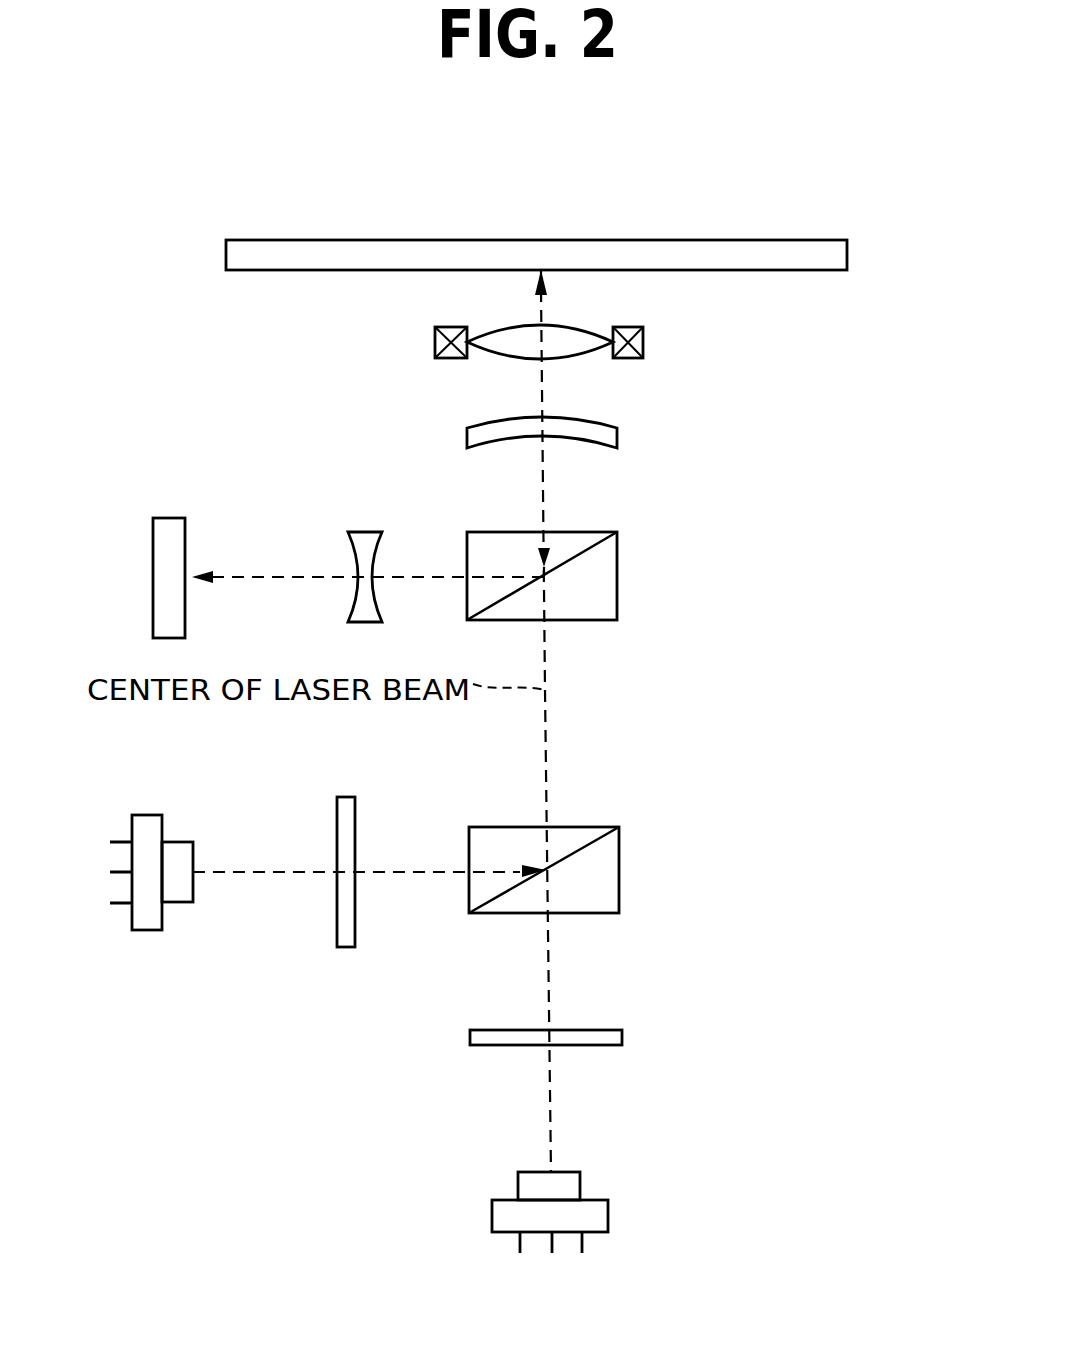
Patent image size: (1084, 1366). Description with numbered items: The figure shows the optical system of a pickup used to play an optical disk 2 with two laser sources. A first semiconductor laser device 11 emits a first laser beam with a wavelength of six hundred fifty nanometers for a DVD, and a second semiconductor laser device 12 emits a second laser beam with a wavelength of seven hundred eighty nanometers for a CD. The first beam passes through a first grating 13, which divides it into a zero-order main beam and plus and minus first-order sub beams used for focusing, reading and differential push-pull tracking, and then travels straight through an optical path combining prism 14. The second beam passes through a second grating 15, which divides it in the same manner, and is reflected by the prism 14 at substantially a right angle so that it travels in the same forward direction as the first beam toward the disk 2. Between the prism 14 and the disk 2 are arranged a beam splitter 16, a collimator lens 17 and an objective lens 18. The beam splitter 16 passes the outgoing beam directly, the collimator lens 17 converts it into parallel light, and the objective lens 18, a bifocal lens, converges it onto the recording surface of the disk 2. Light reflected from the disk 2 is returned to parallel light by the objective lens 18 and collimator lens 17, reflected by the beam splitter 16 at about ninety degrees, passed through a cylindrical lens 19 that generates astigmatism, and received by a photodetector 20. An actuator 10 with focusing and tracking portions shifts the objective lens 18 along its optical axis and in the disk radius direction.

The optical disk 2 is at (800, 240).
The actuator 10 is at (435, 342).
The first semiconductor laser device 11 is at (608, 1215).
The second semiconductor laser device 12 is at (148, 815).
The first grating 13 is at (622, 1036).
The optical path combining prism 14 is at (619, 878).
The second grating 15 is at (347, 797).
The beam splitter 16 is at (617, 588).
The collimator lens 17 is at (617, 440).
The objective lens 18 is at (507, 326).
The cylindrical lens 19 is at (370, 532).
The photodetector 20 is at (168, 518).